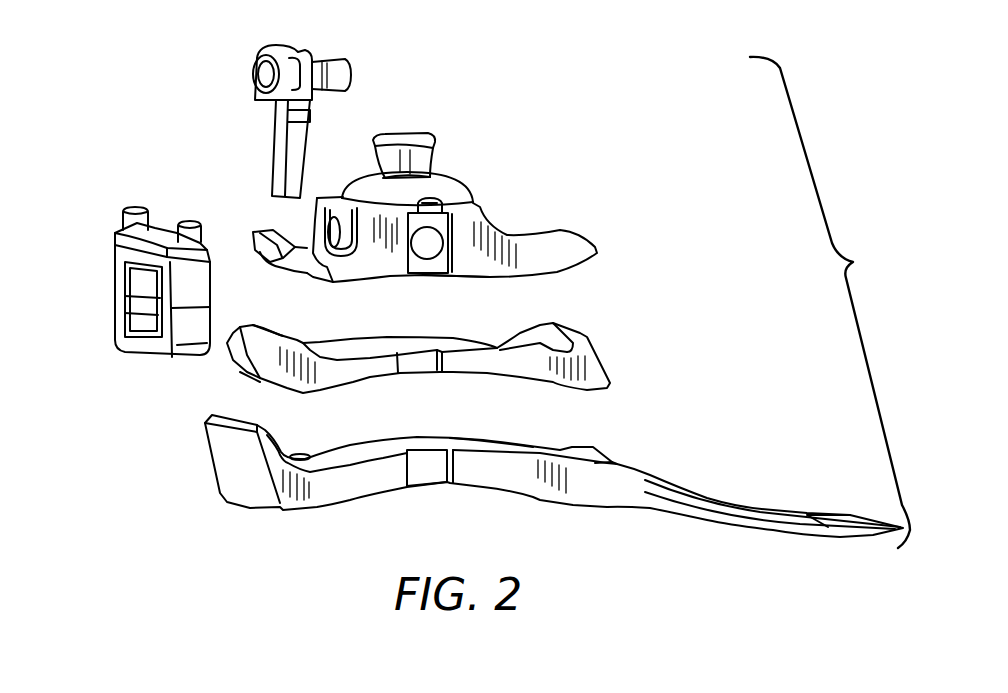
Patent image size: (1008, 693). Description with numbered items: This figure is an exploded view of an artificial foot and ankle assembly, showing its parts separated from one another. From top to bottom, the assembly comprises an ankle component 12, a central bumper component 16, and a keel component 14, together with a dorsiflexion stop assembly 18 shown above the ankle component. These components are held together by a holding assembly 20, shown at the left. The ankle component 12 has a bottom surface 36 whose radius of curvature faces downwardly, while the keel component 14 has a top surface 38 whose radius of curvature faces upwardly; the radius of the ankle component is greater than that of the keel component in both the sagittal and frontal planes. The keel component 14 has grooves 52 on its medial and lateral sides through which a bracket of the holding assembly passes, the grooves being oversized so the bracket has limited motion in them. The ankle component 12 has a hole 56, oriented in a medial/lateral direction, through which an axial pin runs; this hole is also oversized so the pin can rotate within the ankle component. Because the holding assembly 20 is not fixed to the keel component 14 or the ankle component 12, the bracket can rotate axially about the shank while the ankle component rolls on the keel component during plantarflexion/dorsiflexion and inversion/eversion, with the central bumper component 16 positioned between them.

The ankle component 12 is at (495, 170).
The keel component 14 is at (683, 468).
The central bumper component 16 is at (612, 342).
The dorsiflexion stop assembly 18 is at (243, 77).
The holding assembly 20 is at (101, 239).
The bottom surface 36 is at (468, 276).
The top surface 38 is at (468, 444).
The grooves 52 is at (428, 466).
The hole 56 is at (426, 248).